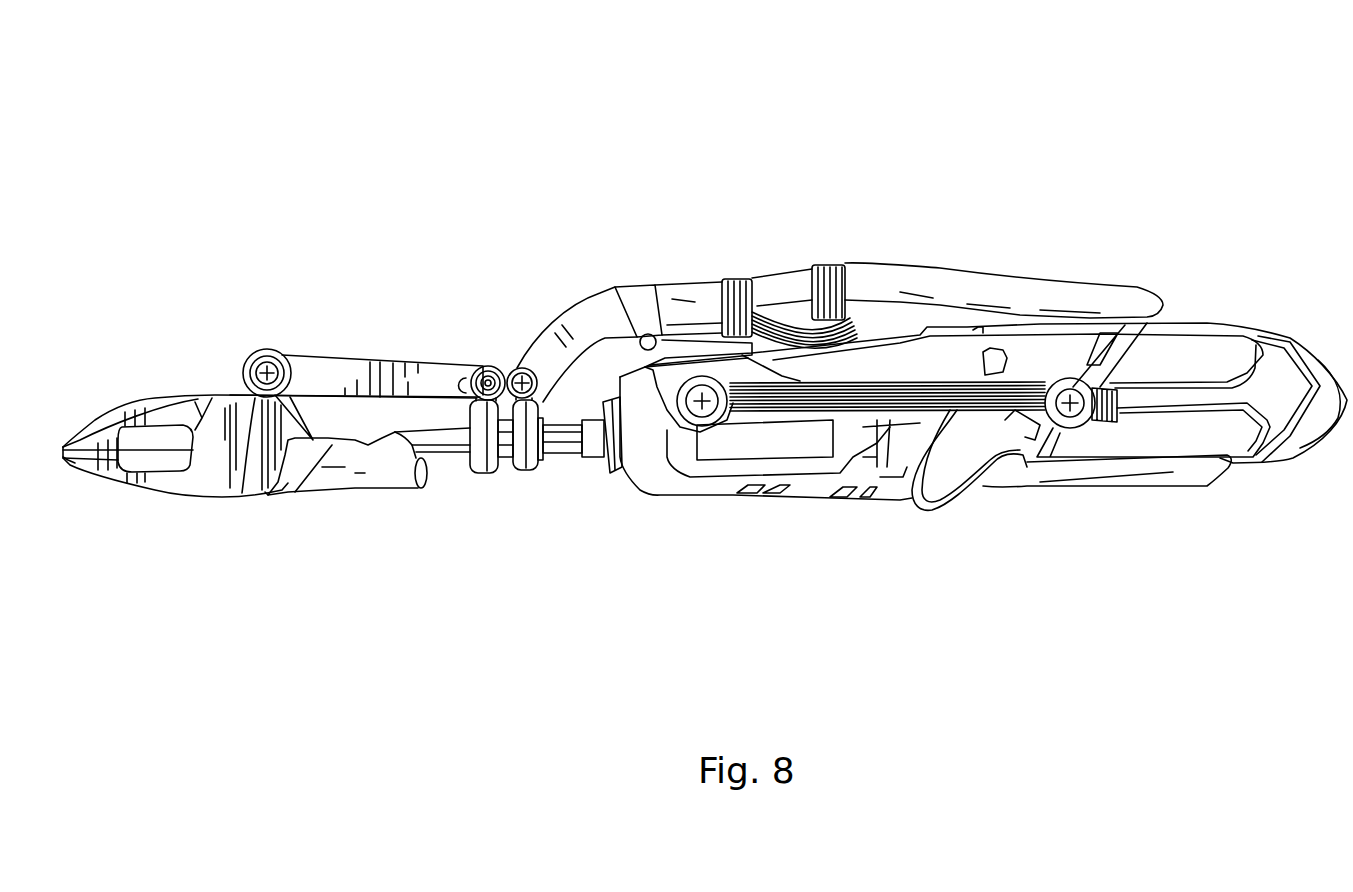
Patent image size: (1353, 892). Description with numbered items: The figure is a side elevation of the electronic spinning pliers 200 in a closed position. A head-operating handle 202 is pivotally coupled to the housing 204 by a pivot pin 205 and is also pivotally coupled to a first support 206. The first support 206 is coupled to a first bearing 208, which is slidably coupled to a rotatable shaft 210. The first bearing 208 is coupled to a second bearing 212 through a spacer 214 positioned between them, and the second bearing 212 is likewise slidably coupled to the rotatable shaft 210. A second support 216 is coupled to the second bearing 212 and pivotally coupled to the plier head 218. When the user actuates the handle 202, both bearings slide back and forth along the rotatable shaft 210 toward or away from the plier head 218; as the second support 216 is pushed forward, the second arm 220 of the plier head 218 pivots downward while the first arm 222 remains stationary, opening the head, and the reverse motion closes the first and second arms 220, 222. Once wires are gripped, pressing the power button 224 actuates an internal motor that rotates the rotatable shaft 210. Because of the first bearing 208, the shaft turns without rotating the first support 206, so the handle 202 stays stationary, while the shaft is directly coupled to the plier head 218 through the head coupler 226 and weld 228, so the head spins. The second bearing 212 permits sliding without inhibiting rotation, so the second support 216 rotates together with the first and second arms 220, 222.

The electronic spinning pliers 200 is at (430, 149).
The head-operating handle 202 is at (927, 287).
The housing 204 is at (1230, 350).
The pivot pin 205 is at (650, 288).
The first support 206 is at (585, 332).
The first bearing 208 is at (550, 455).
The rotatable shaft 210 is at (598, 458).
The second bearing 212 is at (470, 465).
The spacer 214 is at (482, 473).
The second support 216 is at (331, 372).
The plier head 218 is at (222, 458).
The second arm 220 is at (70, 470).
The first arm 222 is at (103, 412).
The power button 224 is at (1107, 484).
The head coupler 226 is at (338, 475).
The weld 228 is at (392, 443).